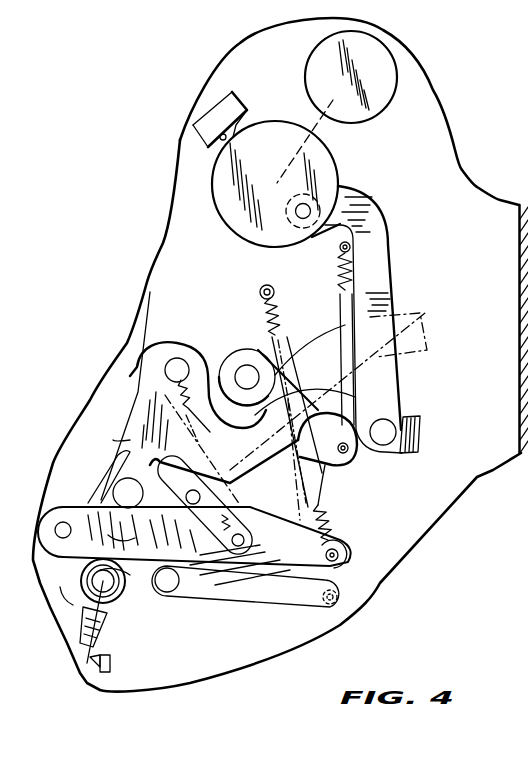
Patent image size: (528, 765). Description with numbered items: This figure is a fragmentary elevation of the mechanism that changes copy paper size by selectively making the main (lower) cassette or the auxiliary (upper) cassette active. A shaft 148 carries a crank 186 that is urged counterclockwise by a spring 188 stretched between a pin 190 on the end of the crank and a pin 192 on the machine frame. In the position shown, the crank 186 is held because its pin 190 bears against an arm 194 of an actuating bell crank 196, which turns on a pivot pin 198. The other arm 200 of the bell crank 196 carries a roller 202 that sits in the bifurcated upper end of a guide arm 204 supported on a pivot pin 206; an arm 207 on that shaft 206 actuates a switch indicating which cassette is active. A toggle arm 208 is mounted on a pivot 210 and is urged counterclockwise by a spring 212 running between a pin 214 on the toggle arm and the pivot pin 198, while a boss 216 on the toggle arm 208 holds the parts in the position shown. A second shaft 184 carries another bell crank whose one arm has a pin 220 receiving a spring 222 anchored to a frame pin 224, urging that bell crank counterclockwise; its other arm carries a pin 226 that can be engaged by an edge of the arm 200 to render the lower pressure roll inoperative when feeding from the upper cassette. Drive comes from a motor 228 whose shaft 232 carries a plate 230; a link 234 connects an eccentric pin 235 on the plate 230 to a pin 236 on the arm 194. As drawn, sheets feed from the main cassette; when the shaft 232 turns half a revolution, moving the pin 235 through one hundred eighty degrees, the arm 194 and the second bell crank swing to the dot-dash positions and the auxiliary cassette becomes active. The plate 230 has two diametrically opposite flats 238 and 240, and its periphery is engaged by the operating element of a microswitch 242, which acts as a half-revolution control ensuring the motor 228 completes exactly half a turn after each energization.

The shaft 148 is at (240, 360).
The shaft 184 is at (182, 592).
The crank 186 is at (326, 468).
The spring 188 is at (354, 279).
The pin 190 is at (352, 462).
The pin 192 is at (350, 247).
The arm 194 is at (421, 421).
The actuating bell crank 196 is at (176, 330).
The pivot pin 198 is at (165, 367).
The arm 200 is at (147, 400).
The roller 202 is at (133, 470).
The guide arm 204 is at (110, 483).
The pivot pin 206 is at (112, 592).
The arm 207 is at (59, 585).
The toggle arm 208 is at (252, 562).
The pivot 210 is at (66, 522).
The spring 212 is at (200, 428).
The pin 214 is at (246, 536).
The boss 216 is at (158, 448).
The pin 220 is at (345, 553).
The spring 222 is at (332, 516).
The pin 224 is at (262, 288).
The pin 226 is at (210, 490).
The motor 228 is at (380, 98).
The plate 230 is at (214, 180).
The shaft 232 is at (313, 127).
The link 234 is at (392, 300).
The eccentric pin 235 is at (306, 203).
The pin 236 is at (392, 418).
The flat 238 is at (313, 237).
The flat 240 is at (240, 127).
The microswitch 242 is at (220, 113).